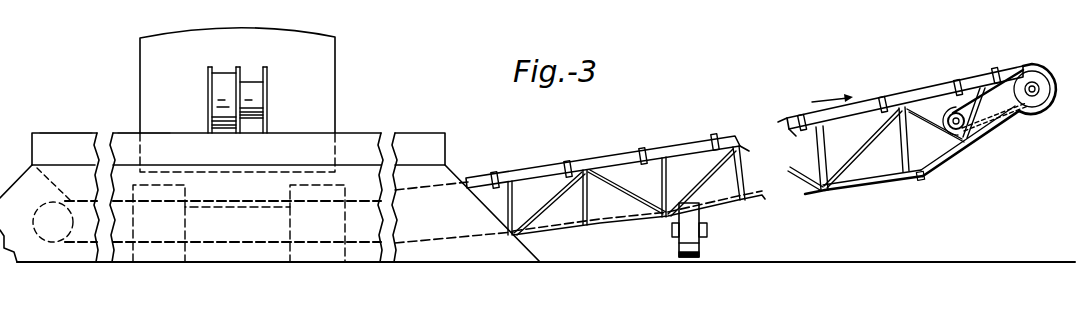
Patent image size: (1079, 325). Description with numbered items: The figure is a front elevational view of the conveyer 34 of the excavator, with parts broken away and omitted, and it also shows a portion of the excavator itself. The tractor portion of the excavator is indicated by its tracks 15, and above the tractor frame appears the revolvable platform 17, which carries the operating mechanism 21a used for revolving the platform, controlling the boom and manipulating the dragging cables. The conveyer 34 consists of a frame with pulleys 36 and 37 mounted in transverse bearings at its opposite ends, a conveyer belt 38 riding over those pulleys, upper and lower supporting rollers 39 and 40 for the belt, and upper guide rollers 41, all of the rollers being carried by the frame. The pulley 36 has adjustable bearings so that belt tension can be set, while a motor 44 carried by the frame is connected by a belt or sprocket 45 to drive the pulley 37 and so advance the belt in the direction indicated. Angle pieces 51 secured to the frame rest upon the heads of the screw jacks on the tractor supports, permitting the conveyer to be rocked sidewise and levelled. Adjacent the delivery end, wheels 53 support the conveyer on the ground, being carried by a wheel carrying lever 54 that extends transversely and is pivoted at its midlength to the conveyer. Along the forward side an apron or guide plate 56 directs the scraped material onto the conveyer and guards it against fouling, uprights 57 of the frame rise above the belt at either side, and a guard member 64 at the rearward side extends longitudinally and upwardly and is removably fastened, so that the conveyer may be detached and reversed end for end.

The tracks 15 is at (187, 232).
The revolvable platform 17 is at (264, 172).
The mechanism 21a is at (273, 95).
The conveyer 34 is at (704, 148).
The pulley 36 is at (68, 232).
The pulley 37 is at (1028, 104).
The conveyer belt 38 is at (737, 133).
The upper supporting rollers 39 is at (423, 190).
The lower supporting rollers 40 is at (155, 248).
The upper guide rollers 41 is at (997, 70).
The motor 44 is at (960, 134).
The belt or sprocket 45 is at (1010, 122).
The angle pieces 51 is at (879, 176).
The wheels 53 is at (700, 249).
The wheel carrying lever 54 is at (680, 238).
The apron or guide plate 56 is at (411, 256).
The uprights 57 is at (590, 214).
The guard member 64 is at (86, 140).